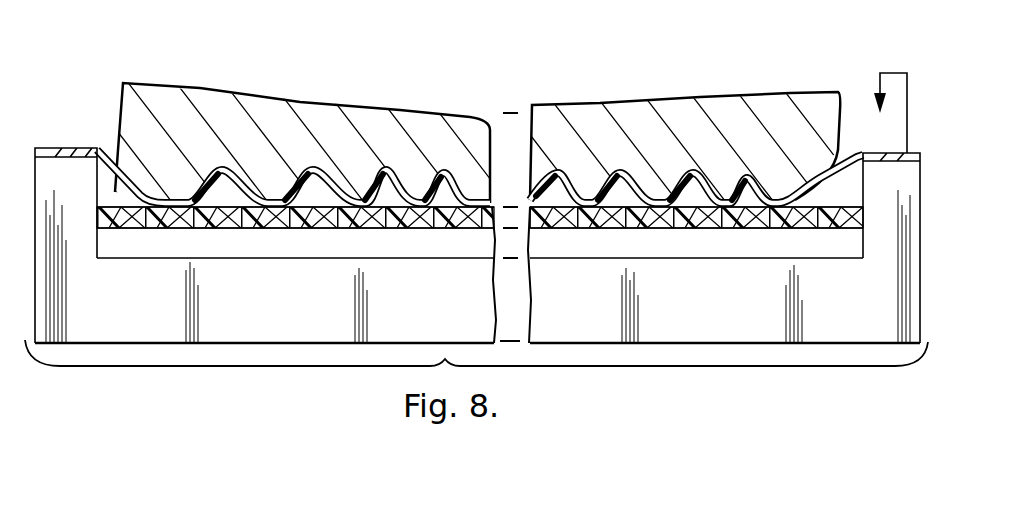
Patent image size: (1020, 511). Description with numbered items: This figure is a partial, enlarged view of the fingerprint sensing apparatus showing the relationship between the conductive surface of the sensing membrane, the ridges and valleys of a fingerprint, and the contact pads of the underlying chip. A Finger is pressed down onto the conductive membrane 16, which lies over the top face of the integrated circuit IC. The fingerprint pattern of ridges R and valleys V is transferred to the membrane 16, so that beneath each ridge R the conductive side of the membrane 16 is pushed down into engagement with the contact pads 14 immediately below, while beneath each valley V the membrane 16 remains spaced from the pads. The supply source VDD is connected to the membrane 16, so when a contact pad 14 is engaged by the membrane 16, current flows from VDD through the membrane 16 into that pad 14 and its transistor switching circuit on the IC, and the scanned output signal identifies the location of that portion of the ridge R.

The contact pad 14 is at (180, 193).
The conductive membrane 16 is at (113, 148).
The ridge R is at (265, 206).
The valley V is at (118, 201).
The integrated circuit IC is at (443, 249).
The finger Finger is at (330, 127).
The supply voltage source VDD is at (882, 113).